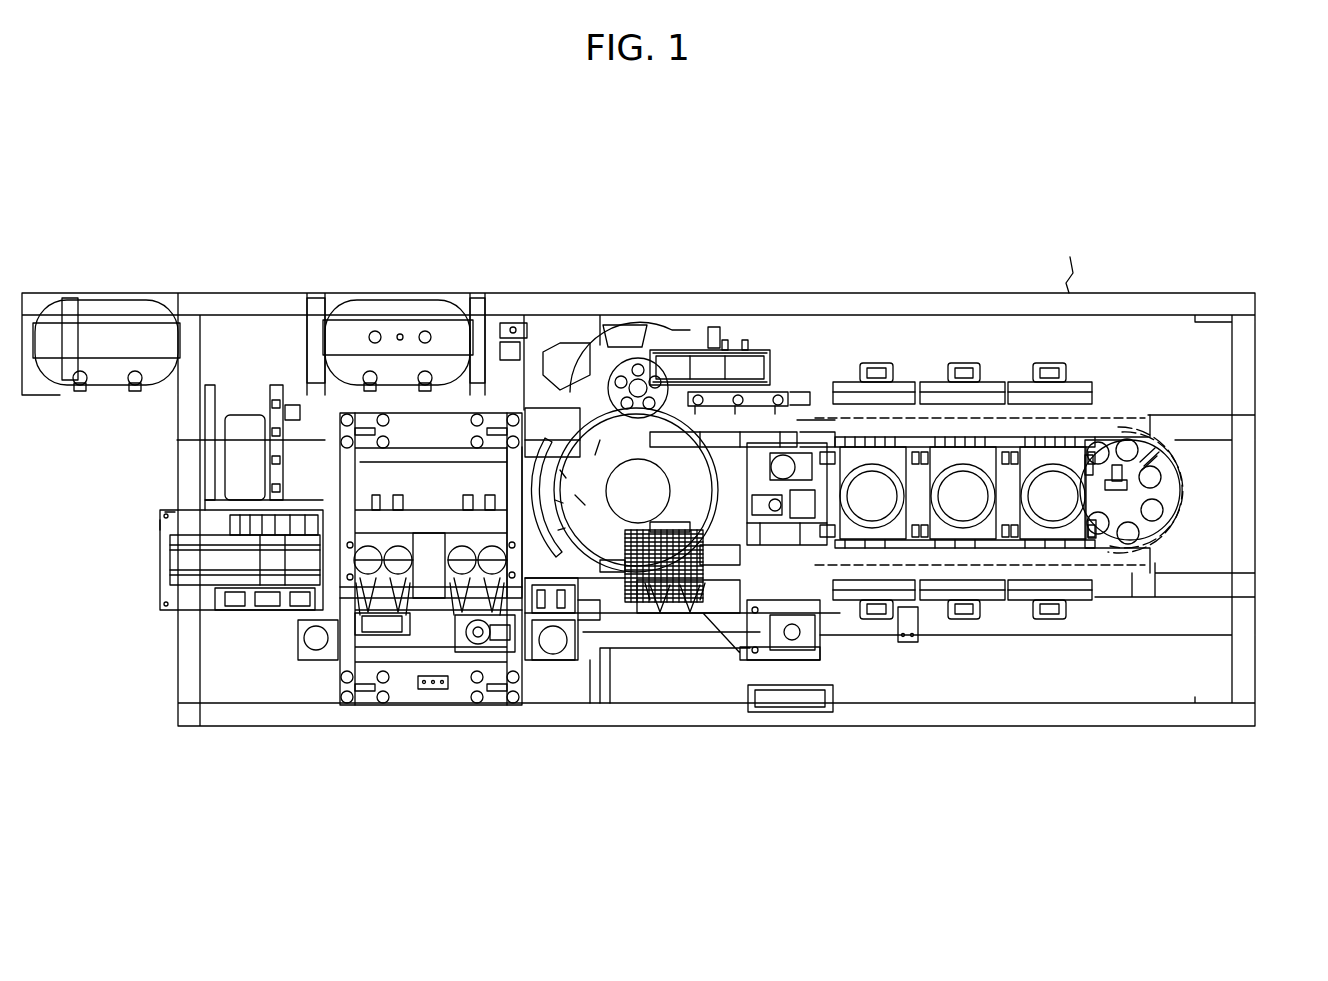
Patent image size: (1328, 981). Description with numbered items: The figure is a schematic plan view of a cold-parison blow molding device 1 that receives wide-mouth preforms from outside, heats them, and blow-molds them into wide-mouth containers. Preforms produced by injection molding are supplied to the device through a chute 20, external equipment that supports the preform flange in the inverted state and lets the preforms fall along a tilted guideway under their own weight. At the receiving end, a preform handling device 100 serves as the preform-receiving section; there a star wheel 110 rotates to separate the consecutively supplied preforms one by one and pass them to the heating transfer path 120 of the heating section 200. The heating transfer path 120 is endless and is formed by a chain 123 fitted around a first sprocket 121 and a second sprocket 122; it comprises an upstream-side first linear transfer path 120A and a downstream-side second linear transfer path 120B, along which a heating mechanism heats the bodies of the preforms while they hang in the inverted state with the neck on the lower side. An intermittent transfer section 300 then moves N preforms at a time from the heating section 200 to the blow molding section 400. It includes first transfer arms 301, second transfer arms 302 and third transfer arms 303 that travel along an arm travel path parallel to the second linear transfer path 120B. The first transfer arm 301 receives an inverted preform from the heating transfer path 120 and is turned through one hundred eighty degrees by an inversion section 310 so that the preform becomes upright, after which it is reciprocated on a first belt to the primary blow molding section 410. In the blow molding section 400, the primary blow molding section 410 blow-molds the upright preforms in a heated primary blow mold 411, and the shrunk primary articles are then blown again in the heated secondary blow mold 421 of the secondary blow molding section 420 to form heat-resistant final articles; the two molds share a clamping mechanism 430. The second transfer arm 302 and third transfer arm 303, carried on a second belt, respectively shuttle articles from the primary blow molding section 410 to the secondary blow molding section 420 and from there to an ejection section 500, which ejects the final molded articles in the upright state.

The blow molding device 1 is at (638, 481).
The chute 20 is at (755, 345).
The preform handling device 100 is at (705, 346).
The star wheel 110 is at (578, 442).
The heating transfer path 120 is at (925, 414).
The first linear transfer path 120A is at (862, 414).
The second linear transfer path 120B is at (937, 575).
The first sprocket 121 is at (556, 472).
The second sprocket 122 is at (1165, 488).
The chain 123 is at (985, 414).
The heating section 200 is at (1100, 412).
The intermittent transfer section 300 is at (607, 610).
The first transfer arm 301 is at (682, 615).
The second transfer arm 302 is at (478, 642).
The third transfer arm 303 is at (378, 606).
The inversion section 310 is at (667, 612).
The blow molding section 400 is at (437, 715).
The primary blow molding section 410 is at (450, 528).
The primary blow mold 411 is at (525, 552).
The secondary blow molding section 420 is at (405, 528).
The secondary blow mold 421 is at (372, 540).
The clamping mechanism 430 is at (344, 678).
The ejection section 500 is at (220, 563).